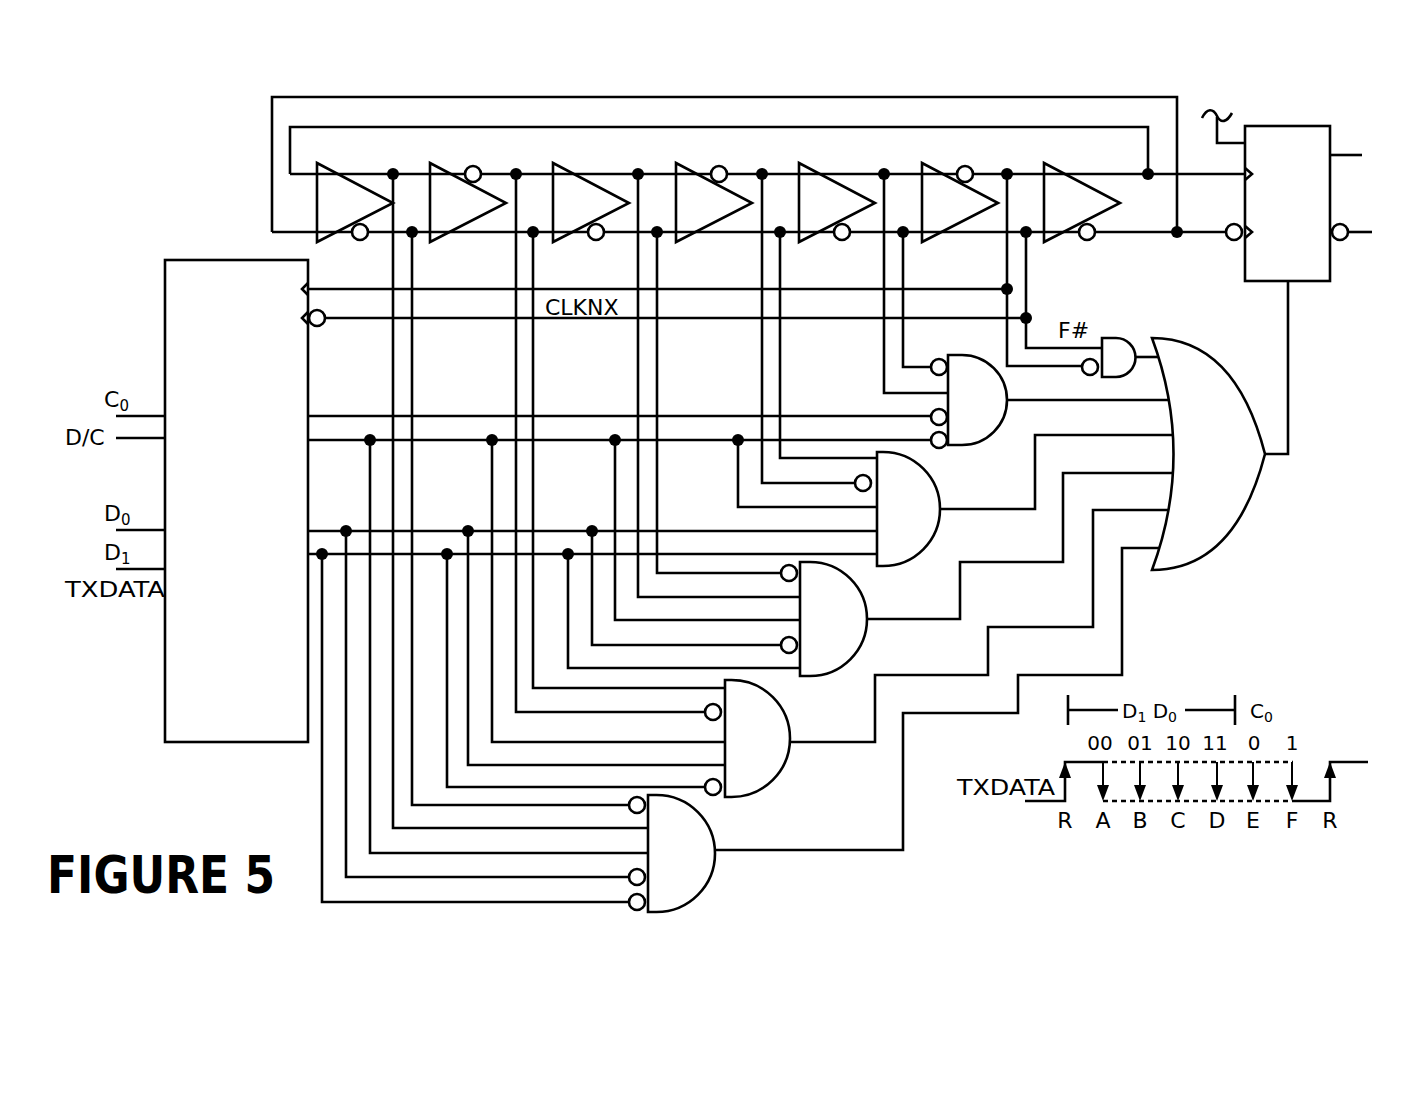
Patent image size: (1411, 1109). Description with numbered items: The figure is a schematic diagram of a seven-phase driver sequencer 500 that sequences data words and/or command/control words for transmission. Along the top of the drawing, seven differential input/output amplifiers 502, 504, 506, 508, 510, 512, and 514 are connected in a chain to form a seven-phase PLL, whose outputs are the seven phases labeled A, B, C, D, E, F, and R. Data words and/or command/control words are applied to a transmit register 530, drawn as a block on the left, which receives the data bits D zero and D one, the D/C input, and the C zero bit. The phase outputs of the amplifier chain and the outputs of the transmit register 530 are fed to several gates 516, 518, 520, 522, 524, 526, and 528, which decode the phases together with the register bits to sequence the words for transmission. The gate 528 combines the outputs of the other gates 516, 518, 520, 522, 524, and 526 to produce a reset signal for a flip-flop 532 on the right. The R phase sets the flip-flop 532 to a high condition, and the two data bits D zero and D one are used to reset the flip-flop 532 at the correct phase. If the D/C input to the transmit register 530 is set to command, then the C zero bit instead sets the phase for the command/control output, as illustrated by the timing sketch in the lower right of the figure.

The seven-phase driver sequencer 500 is at (195, 176).
The differential input/output amplifier 502 is at (337, 240).
The differential input/output amplifier 504 is at (450, 240).
The differential input/output amplifier 506 is at (573, 240).
The differential input/output amplifier 508 is at (696, 240).
The differential input/output amplifier 510 is at (819, 240).
The differential input/output amplifier 512 is at (942, 240).
The differential input/output amplifier 514 is at (1064, 240).
The gate 516 is at (709, 887).
The gate 518 is at (786, 772).
The gate 520 is at (866, 637).
The gate 522 is at (940, 520).
The gate 524 is at (1000, 452).
The gate 526 is at (1135, 345).
The gate 528 is at (1216, 543).
The transmit register 530 is at (165, 688).
The flip-flop 532 is at (1325, 126).